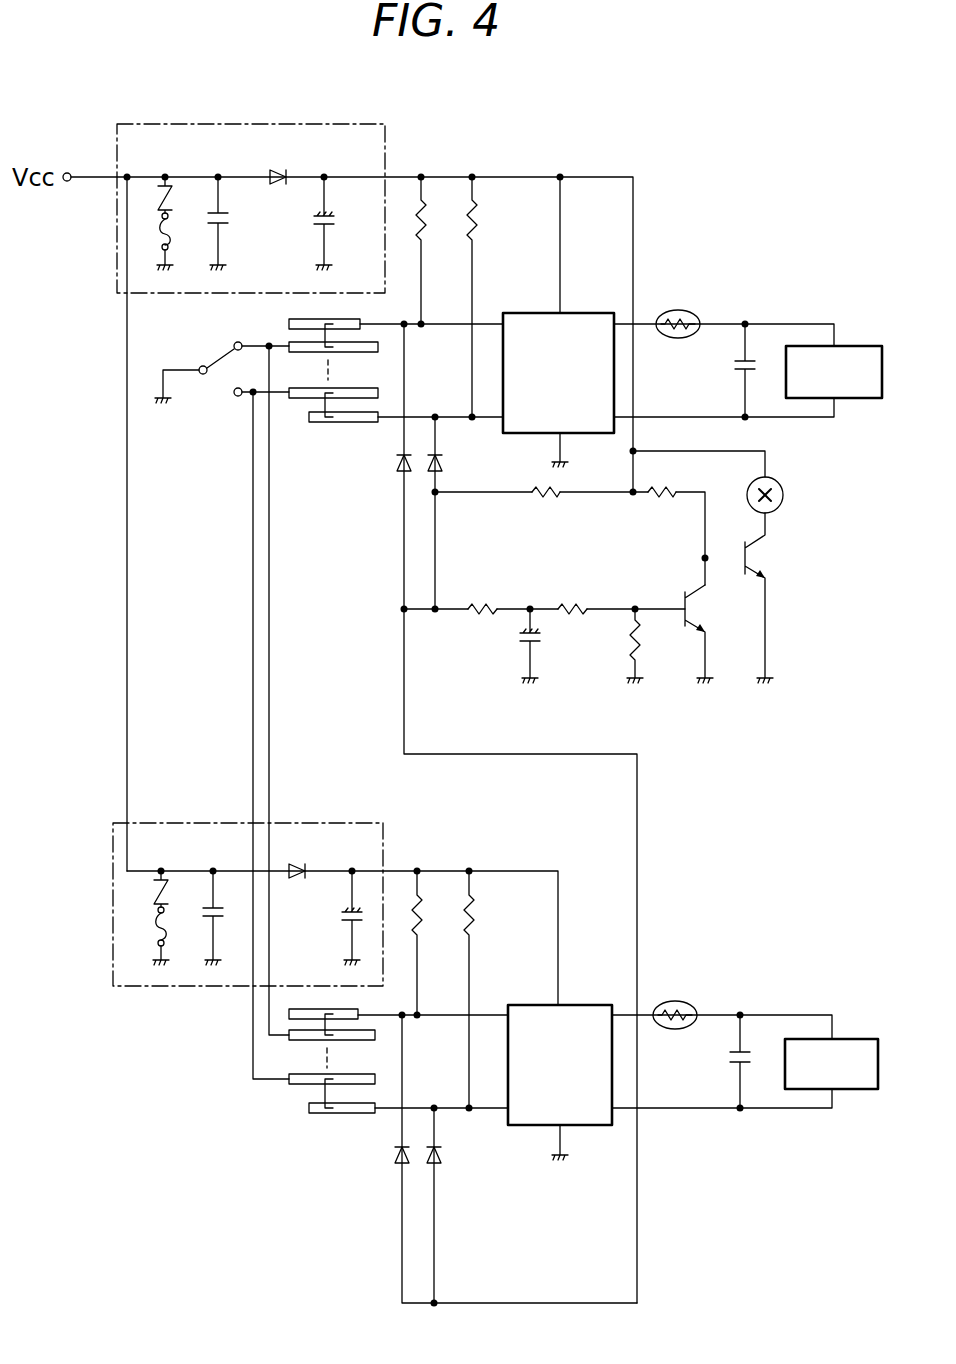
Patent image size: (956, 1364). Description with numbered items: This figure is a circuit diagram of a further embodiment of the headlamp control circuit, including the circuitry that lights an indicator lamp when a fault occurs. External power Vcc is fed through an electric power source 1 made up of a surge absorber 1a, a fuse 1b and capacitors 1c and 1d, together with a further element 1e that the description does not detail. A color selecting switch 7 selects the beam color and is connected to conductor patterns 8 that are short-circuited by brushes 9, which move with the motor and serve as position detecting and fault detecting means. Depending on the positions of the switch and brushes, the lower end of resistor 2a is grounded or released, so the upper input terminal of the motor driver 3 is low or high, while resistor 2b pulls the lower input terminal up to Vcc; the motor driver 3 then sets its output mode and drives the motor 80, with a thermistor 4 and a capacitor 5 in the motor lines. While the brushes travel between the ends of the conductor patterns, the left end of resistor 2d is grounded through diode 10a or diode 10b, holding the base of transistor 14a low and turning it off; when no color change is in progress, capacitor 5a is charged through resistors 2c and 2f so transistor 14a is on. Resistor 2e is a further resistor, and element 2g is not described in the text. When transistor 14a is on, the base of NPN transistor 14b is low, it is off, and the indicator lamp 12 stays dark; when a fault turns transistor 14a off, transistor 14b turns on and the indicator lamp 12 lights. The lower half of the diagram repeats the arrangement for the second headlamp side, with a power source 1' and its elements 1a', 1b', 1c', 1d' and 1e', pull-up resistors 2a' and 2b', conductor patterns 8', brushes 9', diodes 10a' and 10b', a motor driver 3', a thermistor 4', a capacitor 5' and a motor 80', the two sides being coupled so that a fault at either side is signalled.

The electric power source 1 is at (251, 165).
The surge absorber 1a is at (120, 202).
The fuse 1b is at (120, 244).
The capacitor 1c is at (238, 227).
The capacitor 1d is at (288, 156).
The electrolytic capacitor 1e is at (338, 227).
The resistor 2a is at (437, 250).
The resistor 2b is at (489, 297).
The resistor 2c is at (536, 500).
The resistor 2d is at (574, 602).
The resistor 2e is at (640, 646).
The resistor 2f is at (482, 602).
The resistor 2g is at (662, 500).
The motor driver 3 is at (558, 373).
The thermistor 4 is at (683, 308).
The capacitor 5 is at (729, 370).
The capacitor 5a is at (538, 646).
The color selecting switch 7 is at (210, 380).
The conductor patterns 8 is at (328, 379).
The brushes 9 is at (337, 427).
The diode 10a is at (496, 813).
The diode 10b is at (468, 513).
The indicator lamp 12 is at (781, 488).
The transistor 14a is at (697, 628).
The NPN transistor 14b is at (765, 560).
The motor 80 is at (841, 353).
The power source unit 1' is at (354, 873).
The fuse 1a' is at (111, 892).
The switch 1b' is at (112, 938).
The capacitor 1c' is at (229, 918).
The diode 1d' is at (319, 853).
The electrolytic capacitor 1e' is at (331, 918).
The resistor 2a' is at (437, 943).
The resistor 2b' is at (489, 989).
The motor driver 3' is at (560, 1066).
The thermistor 4' is at (682, 1000).
The capacitor 5' is at (711, 1061).
The relay contact 8' is at (302, 1071).
The relay contact 9' is at (321, 1113).
The diode 10a' is at (485, 1159).
The diode 10b' is at (468, 1205).
The motor 80' is at (840, 1045).